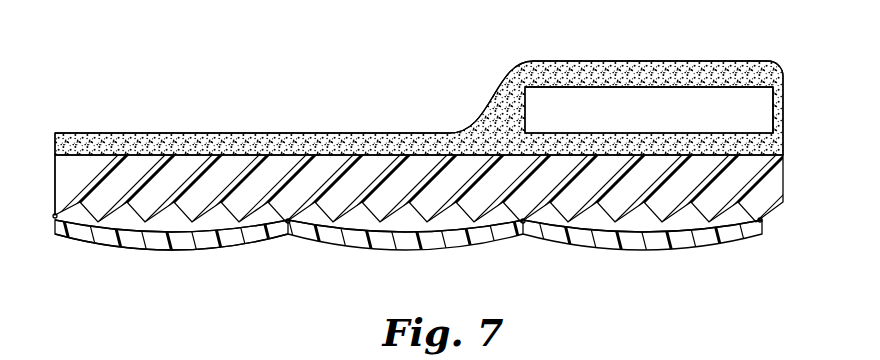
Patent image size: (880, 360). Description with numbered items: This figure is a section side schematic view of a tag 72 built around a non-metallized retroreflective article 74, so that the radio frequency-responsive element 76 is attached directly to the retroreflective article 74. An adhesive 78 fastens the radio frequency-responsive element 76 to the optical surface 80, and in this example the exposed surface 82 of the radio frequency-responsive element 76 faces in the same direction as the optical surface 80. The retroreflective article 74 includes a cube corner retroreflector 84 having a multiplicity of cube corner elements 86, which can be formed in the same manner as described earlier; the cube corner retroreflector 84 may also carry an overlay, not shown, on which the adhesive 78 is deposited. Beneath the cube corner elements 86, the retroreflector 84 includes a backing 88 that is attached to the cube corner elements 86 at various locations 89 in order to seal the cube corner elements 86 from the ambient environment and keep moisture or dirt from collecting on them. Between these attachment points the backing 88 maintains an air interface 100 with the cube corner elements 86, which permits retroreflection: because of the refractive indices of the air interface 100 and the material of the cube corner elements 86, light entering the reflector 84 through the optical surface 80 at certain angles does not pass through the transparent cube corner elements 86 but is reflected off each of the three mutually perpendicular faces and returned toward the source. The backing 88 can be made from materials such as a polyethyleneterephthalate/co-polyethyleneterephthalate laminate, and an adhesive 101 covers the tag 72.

The tag 72 is at (482, 92).
The retroreflective article 74 is at (790, 163).
The radio frequency-responsive element 76 is at (638, 95).
The adhesive 78 is at (776, 141).
The optical surface 80 is at (186, 150).
The exposed surface 82 is at (706, 72).
The cube corner retroreflector 84 is at (54, 173).
The cube corner elements 86 is at (110, 207).
The backing 88 is at (230, 245).
The locations 89 is at (55, 219).
The air interface 100 is at (181, 228).
The adhesive 101 is at (273, 134).